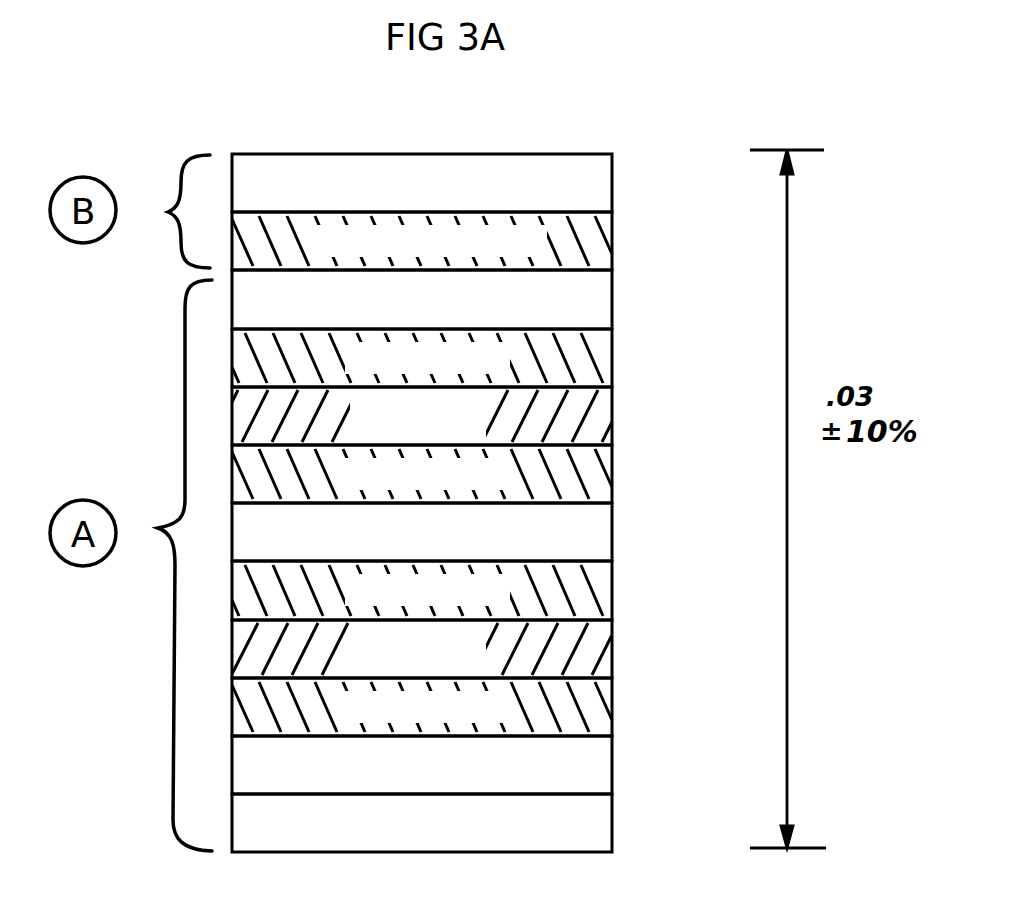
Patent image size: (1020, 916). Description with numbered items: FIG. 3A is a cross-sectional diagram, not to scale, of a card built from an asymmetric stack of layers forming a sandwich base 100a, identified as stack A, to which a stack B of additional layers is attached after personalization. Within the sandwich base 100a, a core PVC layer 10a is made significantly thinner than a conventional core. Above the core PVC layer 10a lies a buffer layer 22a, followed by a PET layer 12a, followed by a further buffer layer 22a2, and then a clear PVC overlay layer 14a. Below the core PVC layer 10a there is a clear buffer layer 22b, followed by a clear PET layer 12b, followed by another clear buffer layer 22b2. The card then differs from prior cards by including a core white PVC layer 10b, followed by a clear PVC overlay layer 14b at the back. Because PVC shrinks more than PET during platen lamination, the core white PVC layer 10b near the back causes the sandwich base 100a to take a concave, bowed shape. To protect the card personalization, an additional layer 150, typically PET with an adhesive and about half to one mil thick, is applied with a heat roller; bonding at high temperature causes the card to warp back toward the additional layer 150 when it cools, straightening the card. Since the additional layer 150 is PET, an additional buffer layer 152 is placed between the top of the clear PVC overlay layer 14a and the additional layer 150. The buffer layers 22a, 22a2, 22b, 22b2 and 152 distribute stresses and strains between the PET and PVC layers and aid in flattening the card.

The additional layer 150 is at (606, 188).
The additional buffer layer 152 is at (606, 245).
The clear PVC overlay layer 14a is at (606, 305).
The buffer layer 22a2 is at (606, 365).
The PET layer 12a is at (606, 422).
The buffer layer 22a is at (606, 481).
The core PVC layer 10a is at (606, 541).
The clear buffer layer 22b is at (606, 598).
The clear PET layer 12b is at (606, 656).
The clear buffer layer 22b2 is at (606, 715).
The core white PVC layer 10b is at (606, 772).
The clear PVC overlay layer 14b is at (606, 830).
The sandwich base 100a is at (161, 565).